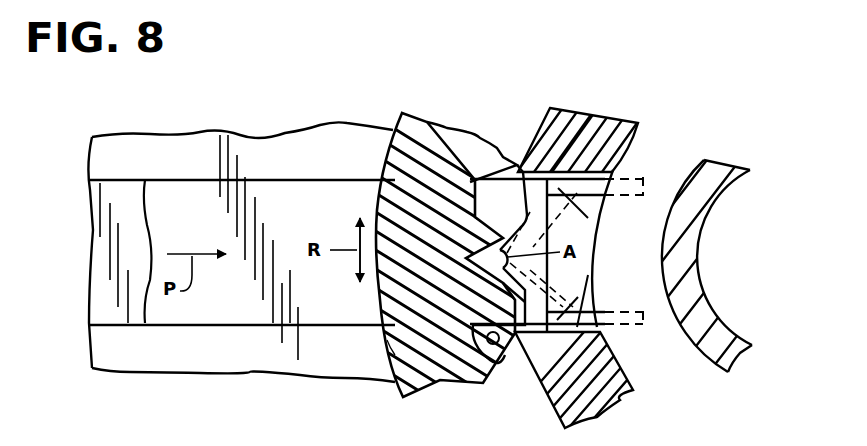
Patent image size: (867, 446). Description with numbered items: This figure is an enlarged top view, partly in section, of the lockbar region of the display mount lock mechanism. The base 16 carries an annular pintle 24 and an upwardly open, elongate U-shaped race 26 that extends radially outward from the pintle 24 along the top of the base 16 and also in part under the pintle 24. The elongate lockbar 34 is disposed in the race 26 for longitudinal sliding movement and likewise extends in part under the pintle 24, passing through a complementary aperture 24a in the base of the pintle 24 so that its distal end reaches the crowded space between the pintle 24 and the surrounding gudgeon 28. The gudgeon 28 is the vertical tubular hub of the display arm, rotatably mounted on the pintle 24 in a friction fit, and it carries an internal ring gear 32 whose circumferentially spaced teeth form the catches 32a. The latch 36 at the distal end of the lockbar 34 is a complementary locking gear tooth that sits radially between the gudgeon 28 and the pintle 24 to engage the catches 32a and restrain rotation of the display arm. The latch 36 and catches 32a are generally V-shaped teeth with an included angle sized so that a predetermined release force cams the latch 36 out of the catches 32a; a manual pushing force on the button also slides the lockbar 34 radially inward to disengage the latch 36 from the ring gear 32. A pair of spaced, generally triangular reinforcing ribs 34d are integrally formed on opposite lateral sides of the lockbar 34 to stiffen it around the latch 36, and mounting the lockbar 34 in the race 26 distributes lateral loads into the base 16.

The base 16 is at (157, 380).
The race 26 is at (100, 292).
The lockbar 34 is at (182, 198).
The gudgeon 28 is at (388, 157).
The latch 36 is at (387, 347).
The ring gear 32 is at (473, 155).
The catches 32a is at (480, 383).
The pintle 24 is at (753, 160).
The aperture 24a is at (593, 305).
The reinforcing ribs 34d is at (592, 215).